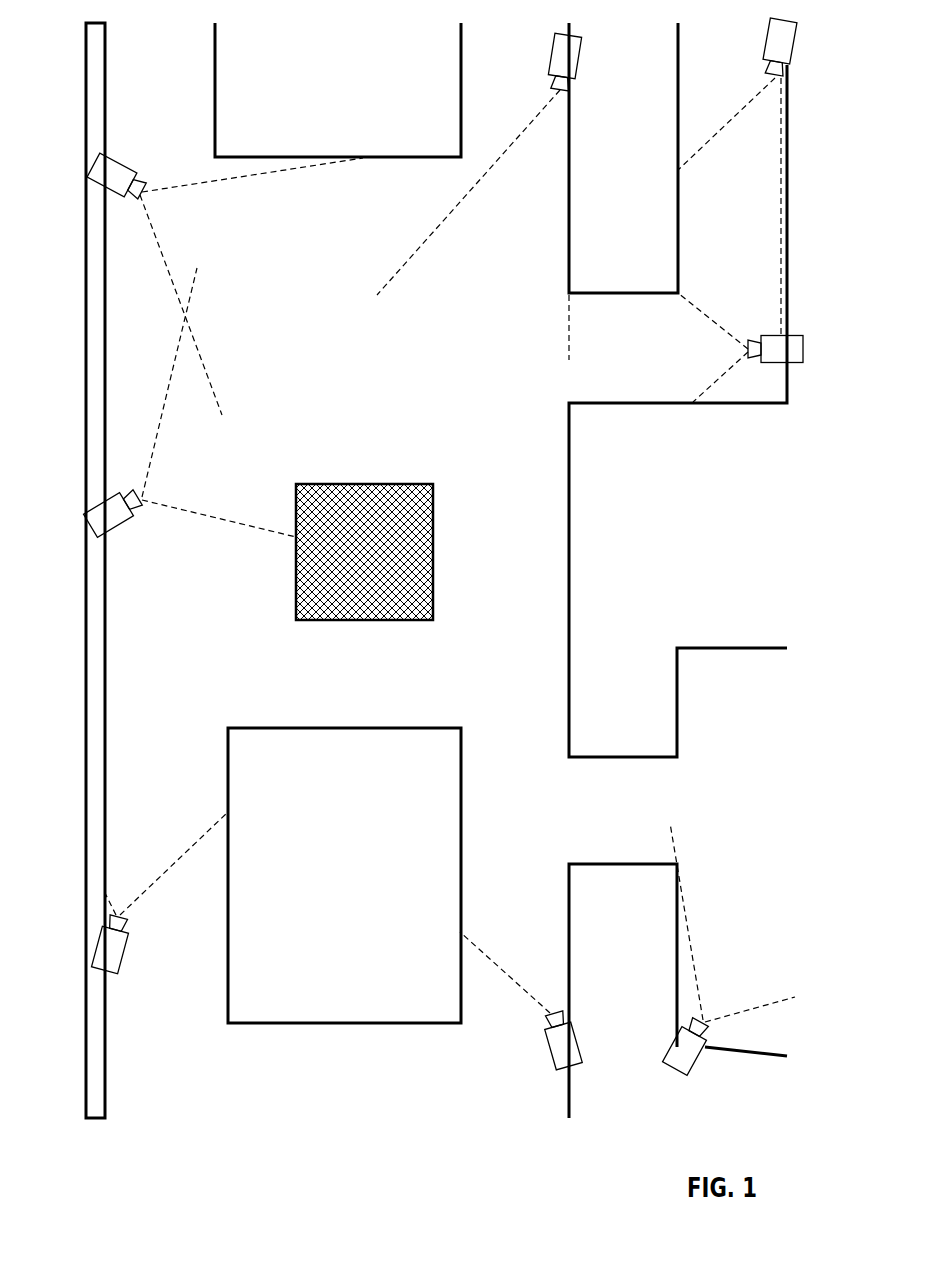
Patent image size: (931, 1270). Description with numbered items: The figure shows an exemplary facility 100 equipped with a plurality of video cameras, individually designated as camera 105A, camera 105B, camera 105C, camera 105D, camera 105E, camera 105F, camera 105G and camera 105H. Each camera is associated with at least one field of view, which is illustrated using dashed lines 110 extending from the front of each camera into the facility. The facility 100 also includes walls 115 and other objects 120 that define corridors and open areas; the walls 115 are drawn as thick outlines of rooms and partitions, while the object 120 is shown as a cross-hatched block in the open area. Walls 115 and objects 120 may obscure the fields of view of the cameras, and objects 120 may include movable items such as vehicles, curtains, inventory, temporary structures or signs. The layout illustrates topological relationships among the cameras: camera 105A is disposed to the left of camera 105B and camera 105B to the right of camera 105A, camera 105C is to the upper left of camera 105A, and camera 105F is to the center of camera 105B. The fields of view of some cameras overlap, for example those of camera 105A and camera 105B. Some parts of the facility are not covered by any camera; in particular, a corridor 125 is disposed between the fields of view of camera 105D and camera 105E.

The facility 100 is at (417, 1162).
The camera 105A is at (118, 158).
The camera 105B is at (123, 528).
The camera 105C is at (770, 336).
The camera 105D is at (547, 1050).
The camera 105E is at (698, 1061).
The camera 105F is at (582, 50).
The camera 105G is at (125, 963).
The camera 105H is at (767, 30).
The dashed lines 110 is at (253, 172).
The walls 115 is at (423, 157).
The objects 120 is at (433, 557).
The corridor 125 is at (675, 787).